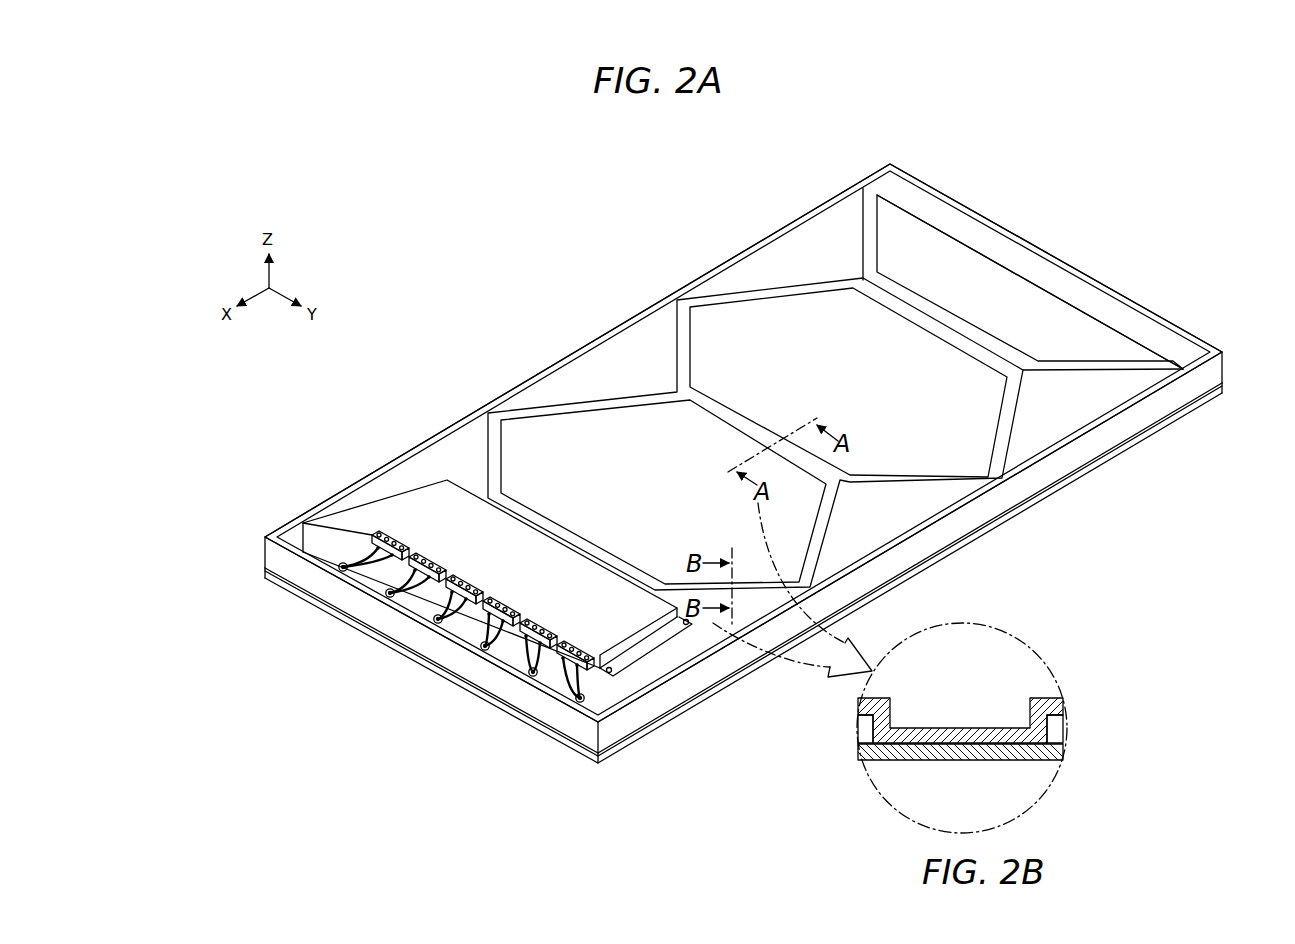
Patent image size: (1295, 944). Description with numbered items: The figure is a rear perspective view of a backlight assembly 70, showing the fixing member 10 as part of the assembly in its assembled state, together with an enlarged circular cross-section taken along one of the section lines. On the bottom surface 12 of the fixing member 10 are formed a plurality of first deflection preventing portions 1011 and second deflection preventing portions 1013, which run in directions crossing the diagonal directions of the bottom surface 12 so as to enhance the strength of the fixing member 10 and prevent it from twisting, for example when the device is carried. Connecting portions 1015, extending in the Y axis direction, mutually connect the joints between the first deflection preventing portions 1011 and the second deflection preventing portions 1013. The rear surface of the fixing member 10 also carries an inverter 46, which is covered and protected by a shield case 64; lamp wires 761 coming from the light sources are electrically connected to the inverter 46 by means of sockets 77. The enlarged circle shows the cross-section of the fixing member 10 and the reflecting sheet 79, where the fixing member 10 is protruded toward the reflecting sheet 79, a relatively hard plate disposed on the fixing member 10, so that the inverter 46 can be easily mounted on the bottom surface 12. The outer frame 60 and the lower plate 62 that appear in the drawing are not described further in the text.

In FIG. 2A, the fixing member 10 is at (1128, 403).
In FIG. 2B, the fixing member 10 is at (1040, 697).
In FIG. 2A, the bottom surface 12 is at (1052, 432).
In FIG. 2A, the inverter 46 is at (598, 668).
In FIG. 2A, the case 60 is at (1225, 371).
In FIG. 2A, the bottom plate 62 is at (647, 727).
In FIG. 2A, the shield case 64 is at (653, 653).
In FIG. 2A, the backlight assembly 70 is at (577, 249).
In FIG. 2A, the socket 77 is at (503, 625).
In FIG. 2B, the reflecting sheet 79 is at (1025, 760).
In FIG. 2A, the lamp wire 761 is at (407, 587).
In FIG. 2A, the first deflection preventing portion 1011 is at (810, 560).
In FIG. 2A, the second deflection preventing portion 1013 is at (935, 482).
In FIG. 2A, the connecting portion 1015 is at (837, 480).